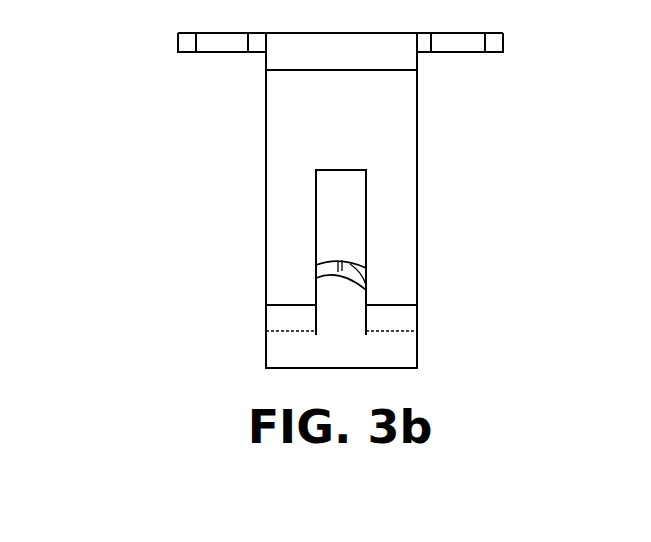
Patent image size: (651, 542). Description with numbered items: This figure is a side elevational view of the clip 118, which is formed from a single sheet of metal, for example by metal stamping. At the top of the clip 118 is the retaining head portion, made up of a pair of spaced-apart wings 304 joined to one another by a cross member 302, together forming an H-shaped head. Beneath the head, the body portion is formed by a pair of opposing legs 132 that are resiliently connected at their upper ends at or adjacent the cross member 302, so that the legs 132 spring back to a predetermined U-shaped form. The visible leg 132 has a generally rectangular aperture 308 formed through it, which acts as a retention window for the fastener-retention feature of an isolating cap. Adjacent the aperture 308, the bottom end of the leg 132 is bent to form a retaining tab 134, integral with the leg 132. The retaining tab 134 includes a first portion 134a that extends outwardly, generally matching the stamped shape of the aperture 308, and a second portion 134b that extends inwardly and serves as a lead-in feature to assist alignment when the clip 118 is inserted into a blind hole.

The clip 118 is at (75, 65).
The leg 132 is at (264, 190).
The cross member 302 is at (397, 32).
The wing 304 is at (220, 32).
The aperture 308 is at (366, 187).
The retaining tab 134 is at (428, 258).
The first portion 134a is at (314, 267).
The second portion 134b is at (263, 356).